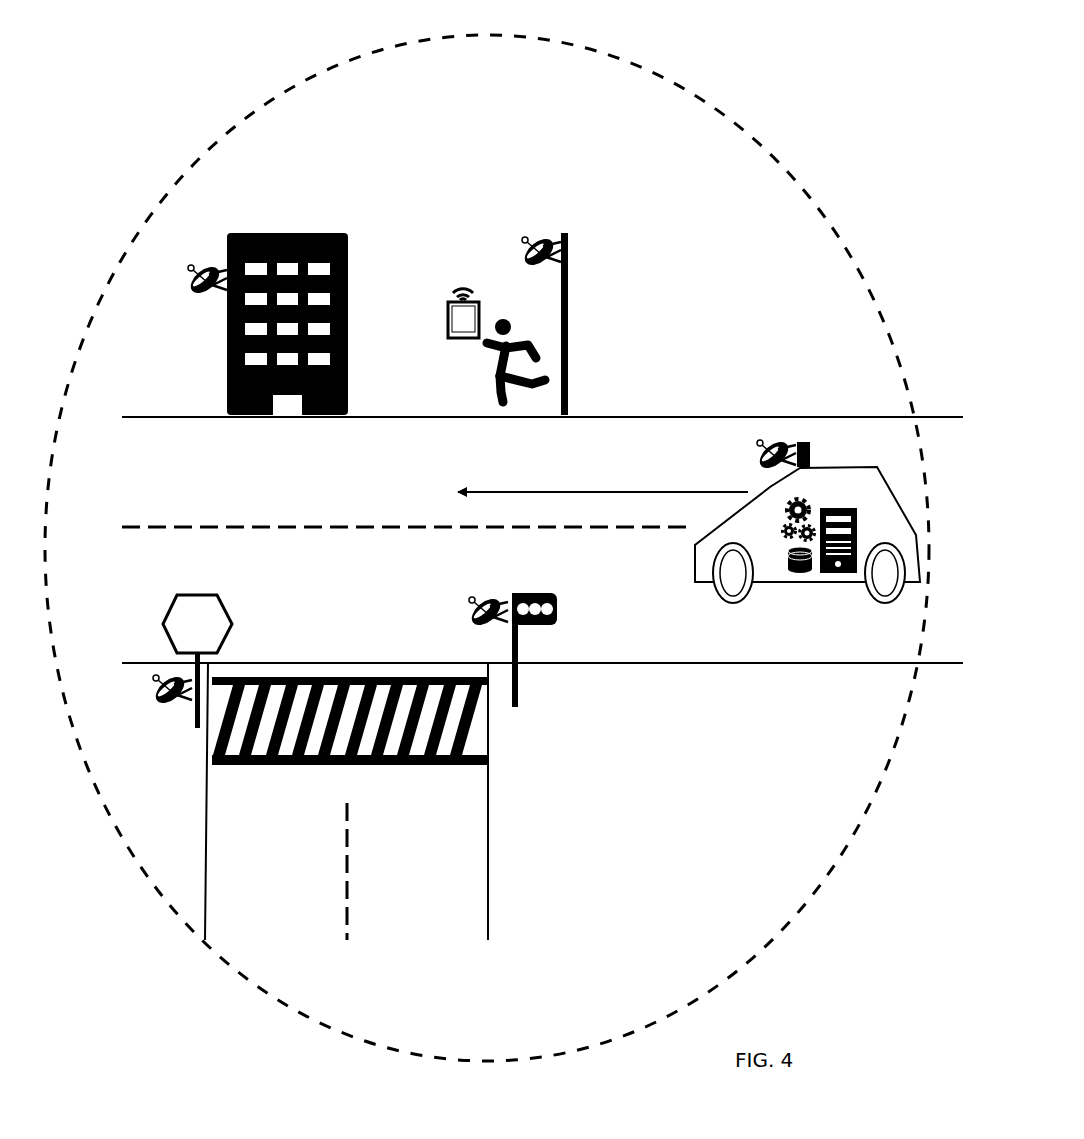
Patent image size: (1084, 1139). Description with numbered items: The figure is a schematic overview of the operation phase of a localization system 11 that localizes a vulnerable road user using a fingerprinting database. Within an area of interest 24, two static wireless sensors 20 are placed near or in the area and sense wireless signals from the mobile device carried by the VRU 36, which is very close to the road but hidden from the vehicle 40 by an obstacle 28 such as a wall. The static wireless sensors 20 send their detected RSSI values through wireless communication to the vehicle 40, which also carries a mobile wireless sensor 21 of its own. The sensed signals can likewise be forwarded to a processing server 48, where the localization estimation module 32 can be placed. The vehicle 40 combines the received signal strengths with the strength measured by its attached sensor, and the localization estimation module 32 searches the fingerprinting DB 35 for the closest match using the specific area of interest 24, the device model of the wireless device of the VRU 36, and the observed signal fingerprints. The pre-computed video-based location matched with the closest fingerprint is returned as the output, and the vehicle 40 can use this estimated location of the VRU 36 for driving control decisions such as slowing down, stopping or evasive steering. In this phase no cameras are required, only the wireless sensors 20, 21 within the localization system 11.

The localization system 11 is at (760, 342).
The static wireless sensor 20 is at (526, 232).
The mobile wireless sensor 21 is at (755, 436).
The area of interest 24 is at (258, 92).
The obstacle 28 is at (576, 319).
The localization estimation module 32 is at (810, 486).
The fingerprinting DB 35 is at (790, 585).
The VRU with a mobile device 36 is at (491, 277).
The vehicle 40 is at (845, 527).
The processing server 48 is at (839, 587).